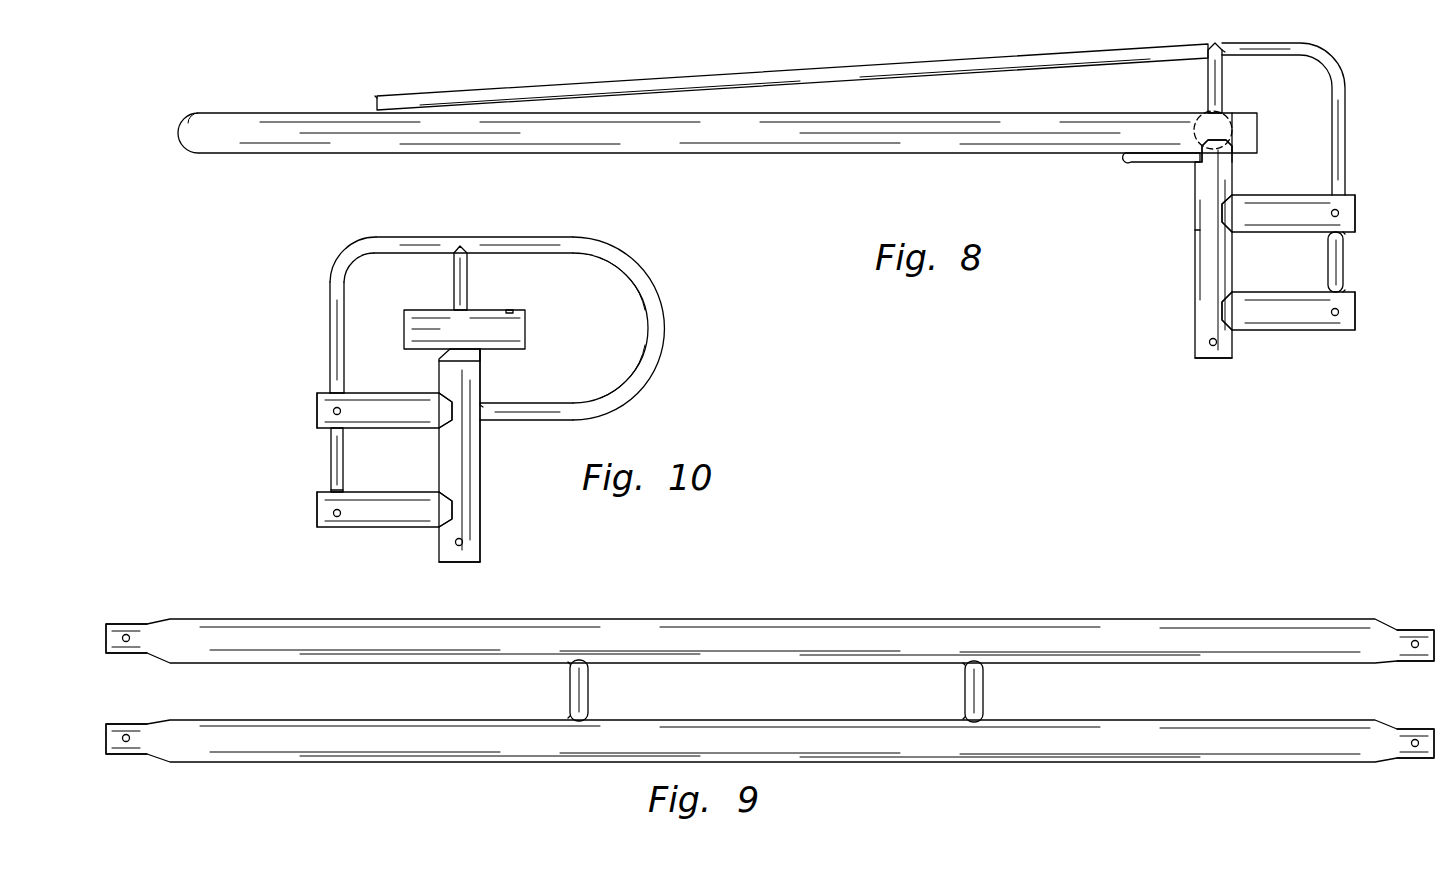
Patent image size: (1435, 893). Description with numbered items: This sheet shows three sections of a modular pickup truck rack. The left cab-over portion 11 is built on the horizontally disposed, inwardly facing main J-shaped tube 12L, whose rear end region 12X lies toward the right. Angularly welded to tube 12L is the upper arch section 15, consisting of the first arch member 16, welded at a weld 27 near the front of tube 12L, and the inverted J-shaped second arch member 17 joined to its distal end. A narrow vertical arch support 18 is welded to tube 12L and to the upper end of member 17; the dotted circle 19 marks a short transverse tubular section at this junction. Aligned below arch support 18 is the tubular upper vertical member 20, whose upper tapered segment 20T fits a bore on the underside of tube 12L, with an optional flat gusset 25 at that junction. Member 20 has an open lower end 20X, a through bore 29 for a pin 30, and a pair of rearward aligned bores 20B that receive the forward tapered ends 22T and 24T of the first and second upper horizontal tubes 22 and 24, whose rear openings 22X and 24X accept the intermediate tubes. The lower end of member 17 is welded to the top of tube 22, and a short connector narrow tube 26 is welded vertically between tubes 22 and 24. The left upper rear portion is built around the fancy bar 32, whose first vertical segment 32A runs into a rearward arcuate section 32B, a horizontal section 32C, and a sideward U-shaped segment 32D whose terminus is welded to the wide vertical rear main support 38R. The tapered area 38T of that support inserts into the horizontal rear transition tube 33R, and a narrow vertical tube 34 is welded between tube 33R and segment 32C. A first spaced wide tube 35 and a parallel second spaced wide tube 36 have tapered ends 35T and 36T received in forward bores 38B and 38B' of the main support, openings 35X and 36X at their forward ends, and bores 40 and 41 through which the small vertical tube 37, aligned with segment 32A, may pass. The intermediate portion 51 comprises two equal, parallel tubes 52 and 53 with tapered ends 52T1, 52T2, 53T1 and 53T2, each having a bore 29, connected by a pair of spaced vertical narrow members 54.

In FIG. 8, the left cab-over portion 11 is at (800, 168).
In FIG. 8, the left main J-shaped tube 12L is at (470, 153).
In FIG. 8, the rear end of upper front tube 12X is at (1257, 135).
In FIG. 8, the upper arch section 15 is at (626, 62).
In FIG. 8, the first arch member 16 is at (775, 75).
In FIG. 8, the second arch member 17 is at (1340, 68).
In FIG. 8, the arch support 18 is at (1208, 72).
In FIG. 8, the dotted circle 19 is at (1233, 118).
In FIG. 8, the upper vertical member 20 is at (1200, 270).
In FIG. 8, the upper tapered segment 20T is at (1203, 158).
In FIG. 8, the aligned bores 20B is at (1200, 232).
In FIG. 8, the lower end opening 20X is at (1222, 360).
In FIG. 8, the first upper horizontal tube 22 is at (1360, 213).
In FIG. 8, the forward tapered end of first upper horizontal tube 22T is at (1245, 212).
In FIG. 8, the opening of first upper horizontal tube 22X is at (1360, 195).
In FIG. 8, the second upper horizontal tube 24 is at (1348, 332).
In FIG. 8, the forward tapered end of second upper horizontal tube 24T is at (1245, 312).
In FIG. 8, the opening of second upper horizontal tube 24X is at (1358, 298).
In FIG. 8, the flat gusset 25 is at (1180, 160).
In FIG. 8, the short connector narrow tube 26 is at (1328, 248).
In FIG. 8, the weld joint 27 is at (377, 103).
In FIG. 10, the weld joint 27 is at (481, 405).
In FIG. 9, the weld joint 27 is at (570, 665).
In FIG. 8, the through bore 29 is at (1333, 210).
In FIG. 10, the through bore 29 is at (510, 309).
In FIG. 9, the through bore 29 is at (126, 642).
In FIG. 8, the pin 30 is at (1210, 340).
In FIG. 10, the pin 30 is at (334, 408).
In FIG. 10, the fancy bar 32 is at (504, 309).
In FIG. 10, the first vertical segment 32A is at (330, 322).
In FIG. 10, the arcuate section 32B is at (345, 255).
In FIG. 10, the horizontal section 32C is at (505, 237).
In FIG. 10, the U-shaped segment 32D is at (678, 324).
In FIG. 10, the right rear transition tube 33R is at (525, 327).
In FIG. 10, the narrow vertically disposed tube 34 is at (454, 275).
In FIG. 10, the first spaced wide tube 35 is at (317, 412).
In FIG. 10, the opening of first spaced wide tube 35X is at (317, 420).
In FIG. 10, the tapered end of first spaced wide tube 35T is at (445, 415).
In FIG. 10, the second spaced wide tube 36 is at (317, 496).
In FIG. 10, the opening of second spaced wide tube 36X is at (317, 512).
In FIG. 10, the tapered end of second spaced wide tube 36T is at (445, 515).
In FIG. 10, the small vertical tube 37 is at (343, 472).
In FIG. 10, the tapered area of rear main support 38T is at (450, 353).
In FIG. 10, the bore of rear main support 38B is at (494, 455).
In FIG. 10, the right rear main support 38R is at (480, 488).
In FIG. 10, the bore of rear main support 38B' is at (502, 537).
In FIG. 10, the bore in first spaced wide tube 40 is at (330, 390).
In FIG. 10, the bore in second spaced wide tube 41 is at (331, 490).
In FIG. 9, the intermediate portion 51 is at (840, 602).
In FIG. 9, the first intermediate tube 52 is at (672, 620).
In FIG. 9, the first tapered end of tube 52 52T1 is at (122, 622).
In FIG. 9, the second tapered end of tube 52 52T2 is at (1415, 630).
In FIG. 9, the second intermediate tube 53 is at (480, 755).
In FIG. 9, the first tapered end of tube 53 53T1 is at (135, 758).
In FIG. 9, the second tapered end of tube 53 53T2 is at (1415, 760).
In FIG. 9, the narrow tubular or bar members 54 is at (590, 695).